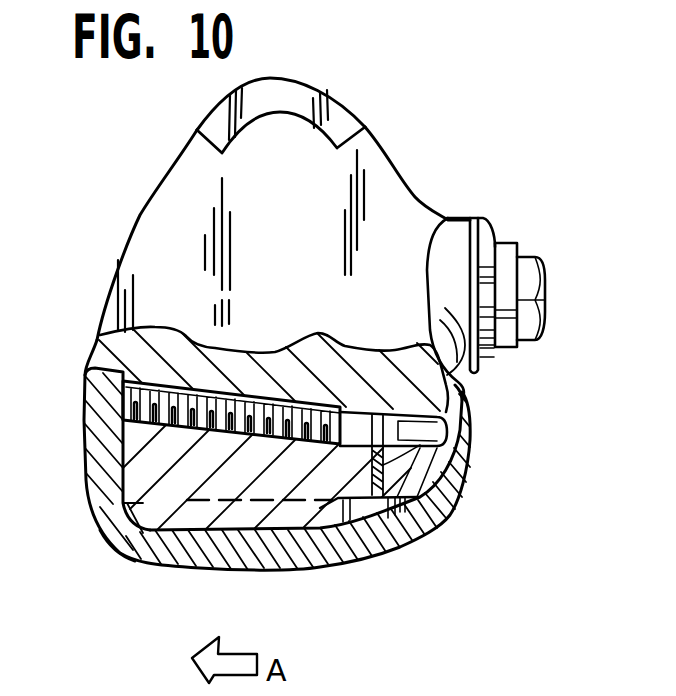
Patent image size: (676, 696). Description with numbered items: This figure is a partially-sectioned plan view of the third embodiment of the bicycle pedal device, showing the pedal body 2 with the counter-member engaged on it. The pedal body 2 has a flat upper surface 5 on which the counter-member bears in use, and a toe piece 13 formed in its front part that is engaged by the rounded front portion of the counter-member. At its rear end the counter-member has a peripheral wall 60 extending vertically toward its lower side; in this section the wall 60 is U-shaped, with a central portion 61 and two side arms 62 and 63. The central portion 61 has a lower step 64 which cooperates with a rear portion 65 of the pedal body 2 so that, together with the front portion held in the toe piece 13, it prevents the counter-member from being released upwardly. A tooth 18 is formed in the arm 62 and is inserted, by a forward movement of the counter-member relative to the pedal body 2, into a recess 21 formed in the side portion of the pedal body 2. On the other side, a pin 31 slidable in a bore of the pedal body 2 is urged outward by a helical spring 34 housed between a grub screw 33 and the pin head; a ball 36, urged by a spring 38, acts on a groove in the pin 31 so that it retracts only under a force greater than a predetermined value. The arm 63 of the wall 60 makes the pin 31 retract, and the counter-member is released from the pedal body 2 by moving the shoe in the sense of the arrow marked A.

The pedal body 2 is at (412, 188).
The flat upper surface 5 is at (170, 193).
The toe piece 13 is at (284, 93).
The tooth 18 is at (133, 440).
The recess 21 is at (146, 561).
The pin 31 is at (462, 398).
The grub screw 33 is at (167, 372).
The helical spring 34 is at (333, 402).
The ball 36 is at (458, 418).
The spring 38 is at (443, 522).
The peripheral wall 60 is at (169, 575).
The central portion 61 is at (295, 556).
The side arm 62 is at (88, 447).
The side arm 63 is at (457, 455).
The lower step 64 is at (370, 543).
The rear portion 65 is at (265, 567).